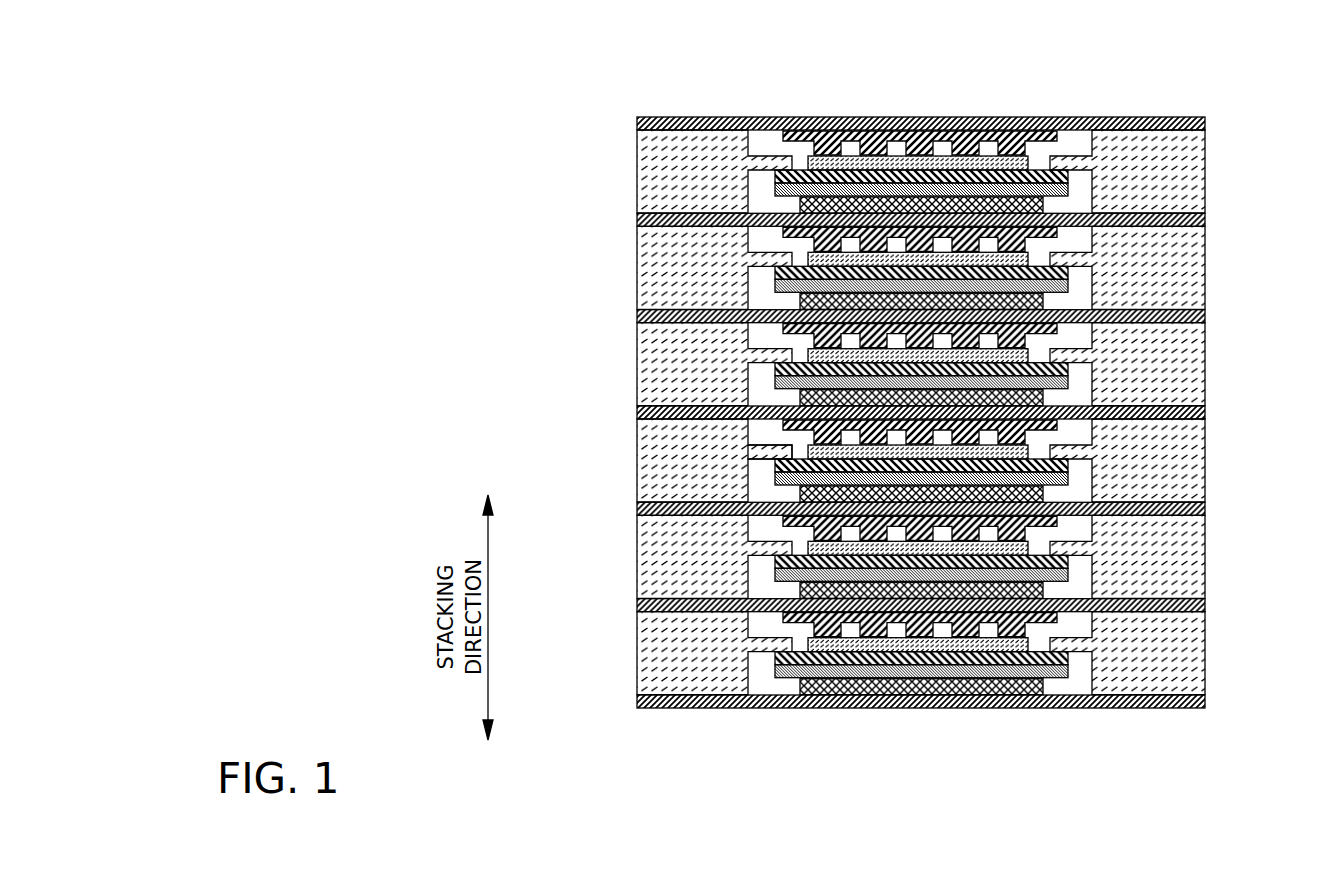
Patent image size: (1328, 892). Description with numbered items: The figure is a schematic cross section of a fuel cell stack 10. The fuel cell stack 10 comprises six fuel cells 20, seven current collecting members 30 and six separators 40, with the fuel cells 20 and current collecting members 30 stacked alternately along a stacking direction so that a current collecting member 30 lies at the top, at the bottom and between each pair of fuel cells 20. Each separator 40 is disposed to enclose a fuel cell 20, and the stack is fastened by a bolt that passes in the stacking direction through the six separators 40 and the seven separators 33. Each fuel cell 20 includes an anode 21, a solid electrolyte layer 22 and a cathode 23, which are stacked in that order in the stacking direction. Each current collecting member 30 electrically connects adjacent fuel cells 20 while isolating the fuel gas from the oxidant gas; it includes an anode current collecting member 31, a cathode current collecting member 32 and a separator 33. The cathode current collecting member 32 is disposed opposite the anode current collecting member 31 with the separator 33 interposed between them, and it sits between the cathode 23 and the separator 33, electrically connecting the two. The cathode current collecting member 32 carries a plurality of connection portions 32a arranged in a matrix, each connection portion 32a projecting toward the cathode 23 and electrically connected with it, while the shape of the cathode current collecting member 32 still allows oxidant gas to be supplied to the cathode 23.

The fuel cell stack 10 is at (593, 123).
The fuel cell 20 is at (570, 340).
The anode 21 is at (773, 388).
The solid electrolyte layer 22 is at (773, 367).
The cathode 23 is at (808, 356).
The current collecting member 30 is at (565, 233).
The anode current collecting member 31 is at (798, 299).
The cathode current collecting member 32 is at (747, 345).
The connection portion 32a is at (793, 441).
The separator 33 is at (638, 318).
The separator 40 is at (1070, 152).